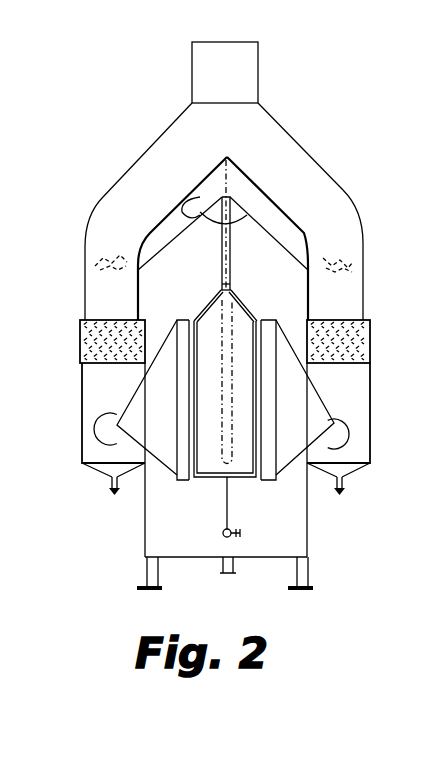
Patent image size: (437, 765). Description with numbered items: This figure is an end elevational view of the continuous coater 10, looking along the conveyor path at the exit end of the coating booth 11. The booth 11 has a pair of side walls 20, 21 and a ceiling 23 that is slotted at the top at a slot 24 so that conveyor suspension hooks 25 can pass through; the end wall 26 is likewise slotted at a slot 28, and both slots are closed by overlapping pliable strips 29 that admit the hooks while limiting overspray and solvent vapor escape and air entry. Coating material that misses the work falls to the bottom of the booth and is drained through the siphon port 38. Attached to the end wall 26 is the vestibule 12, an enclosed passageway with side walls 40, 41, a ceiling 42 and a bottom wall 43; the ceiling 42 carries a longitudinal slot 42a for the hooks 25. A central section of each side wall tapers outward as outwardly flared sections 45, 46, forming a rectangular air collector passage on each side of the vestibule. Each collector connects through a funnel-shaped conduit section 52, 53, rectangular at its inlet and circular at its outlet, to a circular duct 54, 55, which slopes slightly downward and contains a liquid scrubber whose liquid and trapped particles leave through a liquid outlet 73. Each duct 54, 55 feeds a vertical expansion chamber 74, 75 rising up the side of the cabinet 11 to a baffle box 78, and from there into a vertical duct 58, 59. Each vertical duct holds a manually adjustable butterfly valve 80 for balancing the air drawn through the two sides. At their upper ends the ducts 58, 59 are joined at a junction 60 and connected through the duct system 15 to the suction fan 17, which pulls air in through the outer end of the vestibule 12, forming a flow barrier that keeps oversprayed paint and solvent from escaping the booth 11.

The coater 10 is at (106, 615).
The coating booth 11 is at (156, 532).
The vestibule 12 is at (203, 481).
The duct system 15 is at (341, 188).
The suction fan 17 is at (210, 78).
The side wall 20 is at (143, 514).
The side wall 21 is at (310, 521).
The ceiling 23 is at (190, 201).
The slot 24 is at (231, 197).
The conveyor suspension hook 25 is at (242, 165).
The end wall 26 is at (282, 537).
The slot 28 is at (232, 250).
The pliable strip 29 is at (231, 267).
The siphon port 38 is at (234, 568).
The side wall 40 is at (178, 407).
The side wall 41 is at (267, 413).
The ceiling 42 is at (219, 291).
The slot 42a is at (233, 288).
The bottom wall 43 is at (244, 473).
The outwardly flared section 45 is at (175, 476).
The outwardly flared section 46 is at (269, 468).
The funnel-shaped conduit section 52 is at (140, 398).
The funnel-shaped conduit section 53 is at (308, 400).
The circular duct 54 is at (107, 430).
The circular duct 55 is at (343, 437).
The vertical duct 58 is at (108, 209).
The vertical duct 59 is at (345, 212).
The junction 60 is at (232, 136).
The liquid outlet 73 is at (108, 482).
The expansion chamber 74 is at (87, 450).
The expansion chamber 75 is at (372, 450).
The baffle box 78 is at (80, 323).
The butterfly valve 80 is at (85, 259).